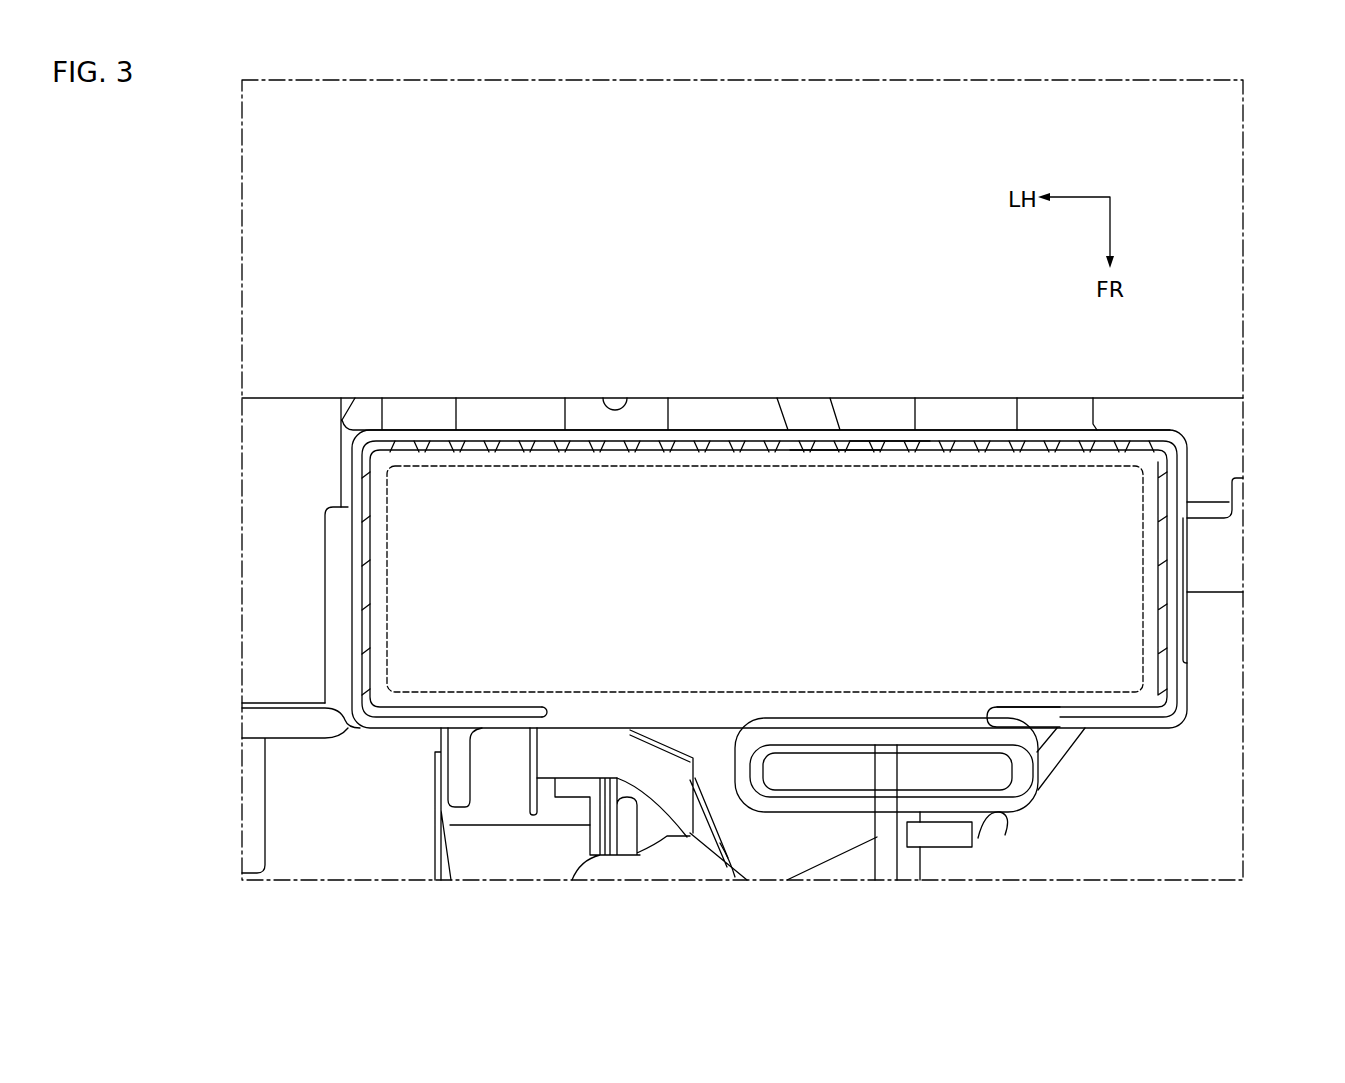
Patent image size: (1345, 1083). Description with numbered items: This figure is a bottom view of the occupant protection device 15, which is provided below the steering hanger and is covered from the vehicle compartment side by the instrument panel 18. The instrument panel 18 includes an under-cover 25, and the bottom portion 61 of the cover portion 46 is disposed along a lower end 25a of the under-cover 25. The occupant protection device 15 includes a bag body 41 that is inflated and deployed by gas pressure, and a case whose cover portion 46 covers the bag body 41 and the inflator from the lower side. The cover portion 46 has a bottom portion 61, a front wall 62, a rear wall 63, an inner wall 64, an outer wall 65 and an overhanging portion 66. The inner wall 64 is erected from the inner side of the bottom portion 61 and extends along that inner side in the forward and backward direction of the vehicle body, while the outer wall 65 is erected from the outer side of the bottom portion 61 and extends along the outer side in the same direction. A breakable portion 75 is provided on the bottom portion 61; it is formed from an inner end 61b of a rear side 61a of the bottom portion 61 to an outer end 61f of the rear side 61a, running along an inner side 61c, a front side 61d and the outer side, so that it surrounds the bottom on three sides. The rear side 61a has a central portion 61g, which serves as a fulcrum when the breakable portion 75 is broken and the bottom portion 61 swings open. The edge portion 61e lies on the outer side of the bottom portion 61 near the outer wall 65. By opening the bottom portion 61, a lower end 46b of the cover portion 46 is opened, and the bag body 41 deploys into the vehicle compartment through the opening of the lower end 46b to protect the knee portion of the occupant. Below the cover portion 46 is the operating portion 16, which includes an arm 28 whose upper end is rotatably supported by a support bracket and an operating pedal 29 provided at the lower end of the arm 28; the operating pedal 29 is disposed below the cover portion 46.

The instrument panel 18 is at (283, 213).
The under-cover 25 is at (285, 283).
The lower end of the under-cover 25a is at (627, 395).
The occupant protection device 15 is at (413, 413).
The bag body 41 is at (988, 462).
The cover portion 46 is at (343, 478).
The lower end of the cover portion 46b is at (957, 440).
The breakable portion 75 is at (512, 450).
The bottom portion 61 is at (728, 510).
The front side 61d is at (832, 462).
The rear wall 63 is at (887, 430).
The left edge portion 61e is at (378, 578).
The inner side 61c is at (1158, 578).
The inner wall 64 is at (1172, 544).
The outer wall 65 is at (355, 578).
The overhanging portion 66 is at (320, 623).
The outer end of the rear side 61f is at (548, 714).
The rear side 61a is at (609, 708).
The front wall 62 is at (720, 729).
The central portion 61g is at (763, 707).
The operating pedal 29 is at (832, 729).
The arm 28 is at (883, 853).
The operating portion 16 is at (912, 832).
The inner end of the rear side 61b is at (985, 716).